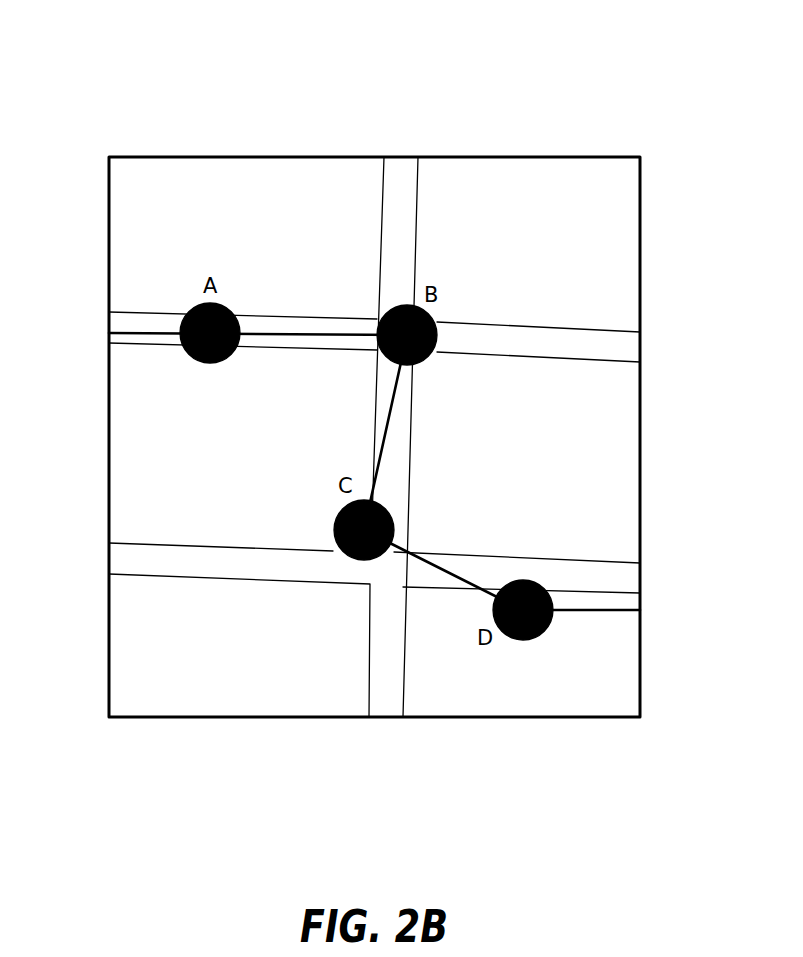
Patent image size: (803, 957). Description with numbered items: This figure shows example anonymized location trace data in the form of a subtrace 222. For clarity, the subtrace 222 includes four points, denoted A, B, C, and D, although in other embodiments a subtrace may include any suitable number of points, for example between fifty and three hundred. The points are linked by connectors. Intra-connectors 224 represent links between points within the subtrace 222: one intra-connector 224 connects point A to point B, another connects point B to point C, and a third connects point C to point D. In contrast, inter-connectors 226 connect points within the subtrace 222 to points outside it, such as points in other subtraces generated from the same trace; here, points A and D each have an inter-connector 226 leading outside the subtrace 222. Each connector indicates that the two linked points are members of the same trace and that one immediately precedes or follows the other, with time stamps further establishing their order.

The subtrace 222 is at (578, 125).
The intra-connector 224 is at (296, 298).
The inter-connector 226 is at (112, 295).